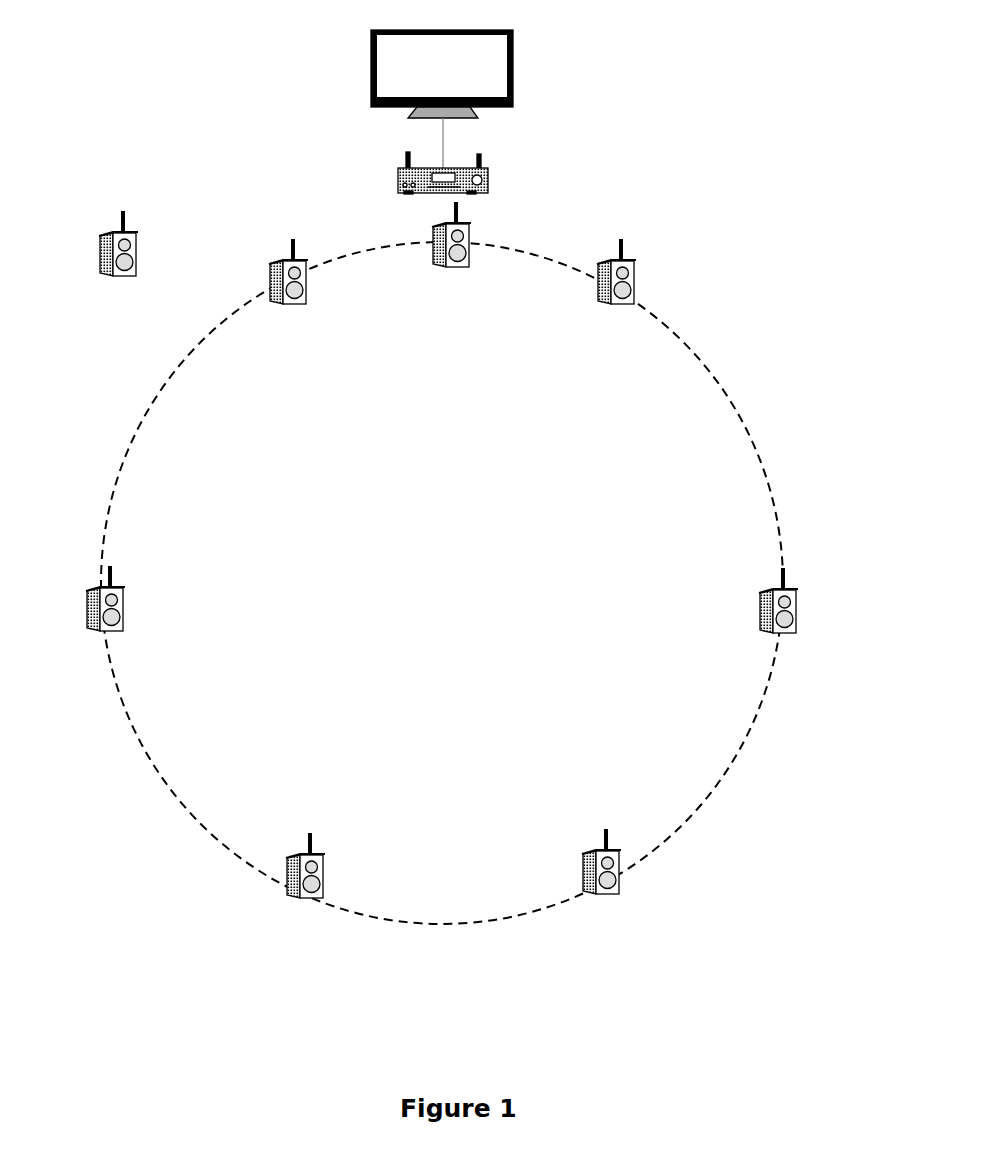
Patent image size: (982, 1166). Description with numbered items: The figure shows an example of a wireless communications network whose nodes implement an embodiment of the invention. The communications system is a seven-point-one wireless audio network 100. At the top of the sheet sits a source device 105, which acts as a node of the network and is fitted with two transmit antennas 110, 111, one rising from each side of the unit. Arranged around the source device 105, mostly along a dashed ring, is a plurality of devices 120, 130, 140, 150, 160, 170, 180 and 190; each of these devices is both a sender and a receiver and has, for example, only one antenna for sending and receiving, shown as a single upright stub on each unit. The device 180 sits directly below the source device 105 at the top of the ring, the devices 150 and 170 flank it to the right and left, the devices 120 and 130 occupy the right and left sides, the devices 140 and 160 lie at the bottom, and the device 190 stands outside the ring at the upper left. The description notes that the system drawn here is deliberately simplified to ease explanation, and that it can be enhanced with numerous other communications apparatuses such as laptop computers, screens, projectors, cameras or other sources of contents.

The wireless audio network 100 is at (191, 142).
The source device 105 is at (400, 192).
The transmit antenna 110 is at (405, 157).
The transmit antenna 111 is at (485, 158).
The device 120 is at (800, 612).
The device 130 is at (84, 590).
The device 140 is at (625, 895).
The device 150 is at (610, 258).
The device 160 is at (313, 903).
The device 170 is at (271, 260).
The device 180 is at (473, 266).
The device 190 is at (98, 230).